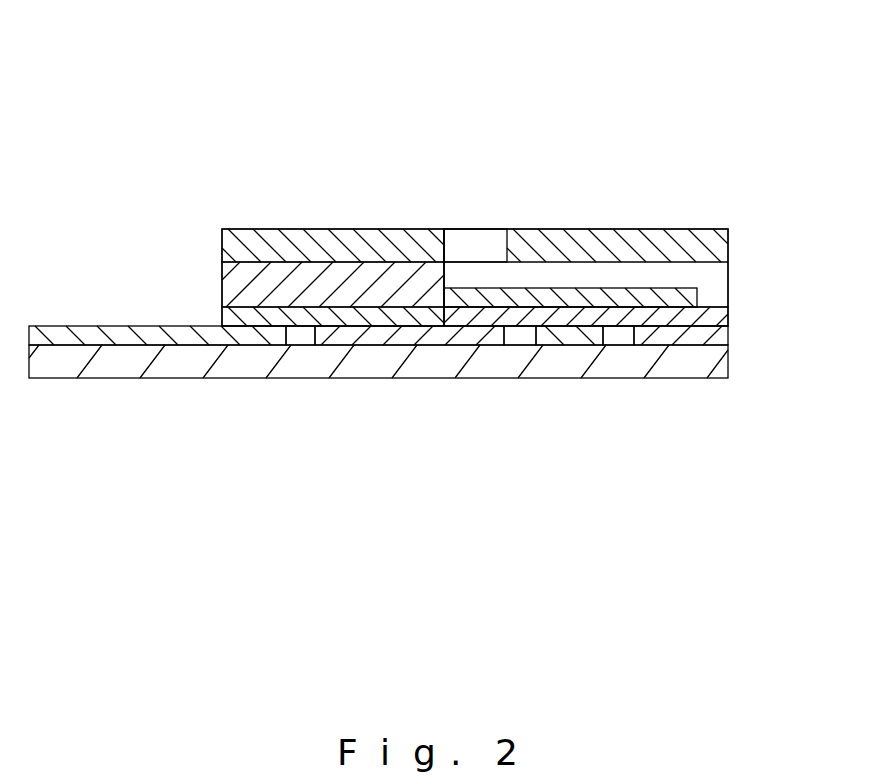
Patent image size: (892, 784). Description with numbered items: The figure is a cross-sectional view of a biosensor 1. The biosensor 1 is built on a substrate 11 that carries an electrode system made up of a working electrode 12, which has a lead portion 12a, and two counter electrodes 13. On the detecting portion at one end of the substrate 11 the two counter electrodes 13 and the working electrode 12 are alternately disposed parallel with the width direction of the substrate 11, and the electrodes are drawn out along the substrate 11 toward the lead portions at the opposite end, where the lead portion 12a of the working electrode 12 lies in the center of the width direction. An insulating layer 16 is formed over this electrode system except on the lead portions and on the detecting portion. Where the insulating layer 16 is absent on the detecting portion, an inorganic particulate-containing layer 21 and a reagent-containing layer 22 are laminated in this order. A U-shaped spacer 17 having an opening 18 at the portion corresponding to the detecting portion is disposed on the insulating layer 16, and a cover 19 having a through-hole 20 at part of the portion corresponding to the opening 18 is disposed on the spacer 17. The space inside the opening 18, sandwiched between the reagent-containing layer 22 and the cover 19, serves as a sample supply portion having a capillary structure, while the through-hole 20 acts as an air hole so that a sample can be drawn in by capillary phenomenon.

The biosensor 1 is at (659, 116).
The substrate 11 is at (196, 370).
The working electrode 12 is at (557, 340).
The lead portion 12a is at (80, 338).
The counter electrodes 13 is at (373, 339).
The insulating layer 16 is at (223, 318).
The spacer 17 is at (223, 278).
The opening 18 is at (720, 270).
The cover 19 is at (223, 241).
The through-hole 20 is at (468, 232).
The particulate-containing layer 21 is at (623, 340).
The reagent-containing layer 22 is at (697, 292).